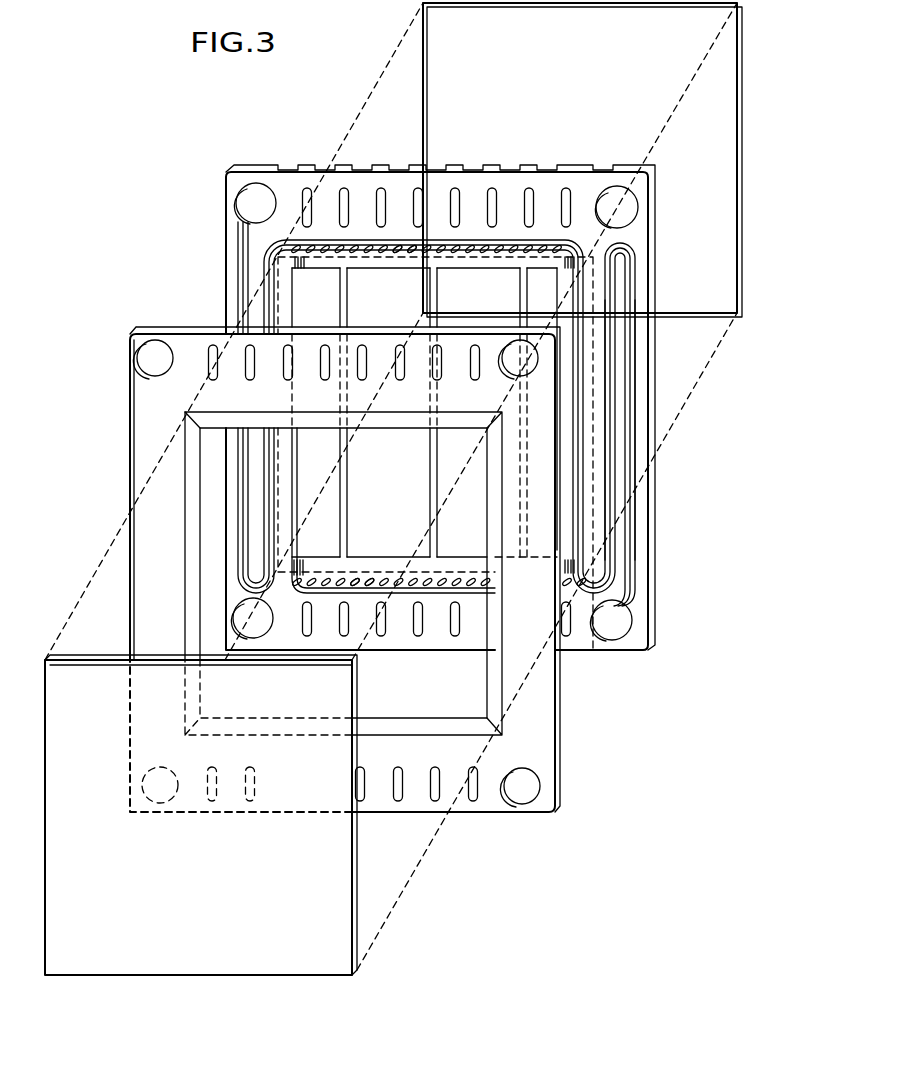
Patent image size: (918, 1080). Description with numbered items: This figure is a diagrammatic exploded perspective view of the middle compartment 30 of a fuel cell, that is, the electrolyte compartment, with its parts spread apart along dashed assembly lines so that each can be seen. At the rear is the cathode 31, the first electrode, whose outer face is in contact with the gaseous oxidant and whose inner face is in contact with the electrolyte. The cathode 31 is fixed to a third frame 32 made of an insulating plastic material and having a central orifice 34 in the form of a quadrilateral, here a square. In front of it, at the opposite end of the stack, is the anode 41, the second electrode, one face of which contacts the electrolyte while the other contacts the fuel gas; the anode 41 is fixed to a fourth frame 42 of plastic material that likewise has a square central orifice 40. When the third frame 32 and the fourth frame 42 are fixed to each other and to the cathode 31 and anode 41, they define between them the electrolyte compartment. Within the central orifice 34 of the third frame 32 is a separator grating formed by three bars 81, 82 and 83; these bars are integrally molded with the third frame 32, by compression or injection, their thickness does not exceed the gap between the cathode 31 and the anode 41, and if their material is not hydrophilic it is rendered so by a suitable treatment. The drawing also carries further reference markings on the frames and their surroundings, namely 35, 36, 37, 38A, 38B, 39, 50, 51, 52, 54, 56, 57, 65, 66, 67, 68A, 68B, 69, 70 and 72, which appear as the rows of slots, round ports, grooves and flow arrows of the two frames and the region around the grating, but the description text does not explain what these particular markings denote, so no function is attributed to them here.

The middle compartment 30 is at (576, 809).
The cathode 31 is at (445, 57).
The third frame 32 is at (440, 394).
The central orifice 34 is at (305, 308).
The plate edge portion 35 is at (578, 654).
The manifold slots 36 is at (402, 200).
The slots 37 is at (342, 200).
The inlet port 38A is at (255, 203).
The outlet port 38B is at (620, 621).
The port hole 39 is at (617, 207).
The central orifice 40 is at (372, 688).
The anode 41 is at (215, 960).
The fourth frame 42 is at (344, 574).
The flow direction 50 is at (641, 363).
The gasket channel 51 is at (268, 273).
The flow slots 52 is at (372, 253).
The rib 54 is at (297, 258).
The channel wall 56 is at (265, 288).
The slot openings 57 is at (412, 252).
The frame side portion 65 is at (152, 624).
The frame portion 66 is at (150, 512).
The frame slots 67 is at (211, 358).
The frame port 68A is at (158, 362).
The frame port 68B is at (527, 787).
The frame hole 69 is at (520, 360).
The bevelled opening edge 70 is at (190, 495).
The flow direction 72 is at (646, 403).
The bar 81 is at (347, 475).
The bar 82 is at (434, 468).
The bar 83 is at (528, 295).